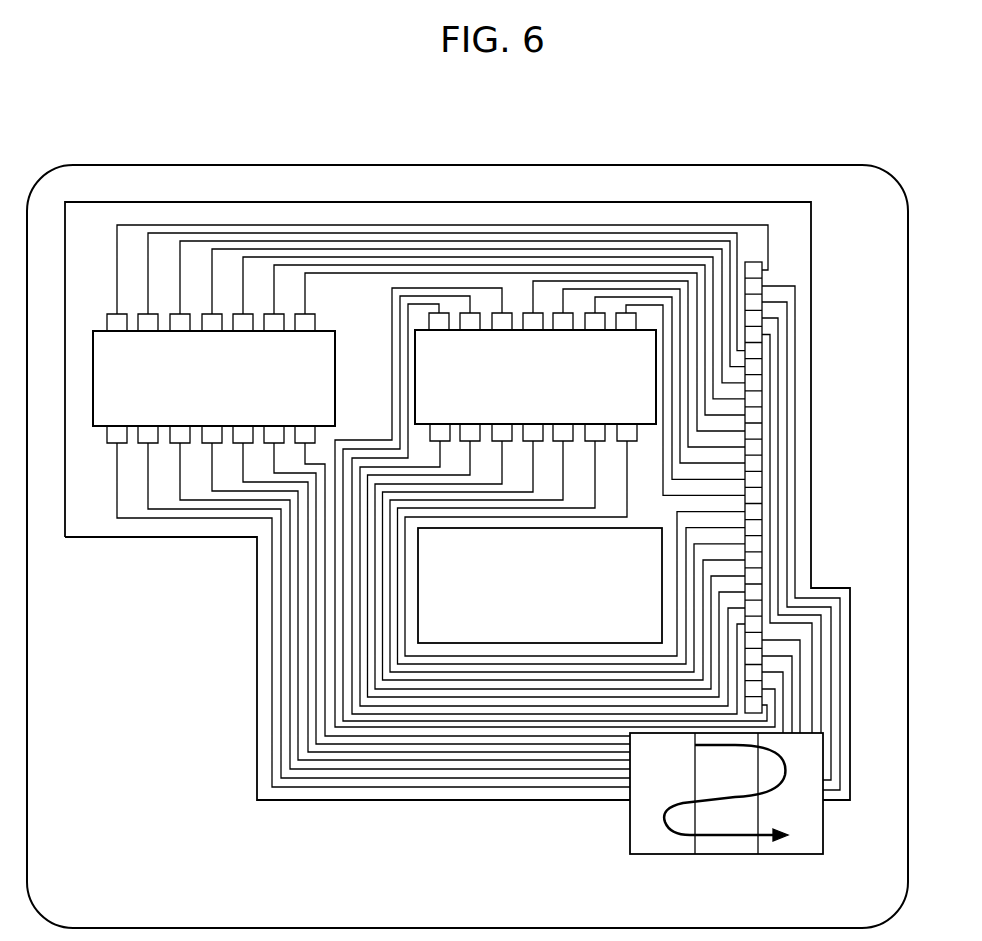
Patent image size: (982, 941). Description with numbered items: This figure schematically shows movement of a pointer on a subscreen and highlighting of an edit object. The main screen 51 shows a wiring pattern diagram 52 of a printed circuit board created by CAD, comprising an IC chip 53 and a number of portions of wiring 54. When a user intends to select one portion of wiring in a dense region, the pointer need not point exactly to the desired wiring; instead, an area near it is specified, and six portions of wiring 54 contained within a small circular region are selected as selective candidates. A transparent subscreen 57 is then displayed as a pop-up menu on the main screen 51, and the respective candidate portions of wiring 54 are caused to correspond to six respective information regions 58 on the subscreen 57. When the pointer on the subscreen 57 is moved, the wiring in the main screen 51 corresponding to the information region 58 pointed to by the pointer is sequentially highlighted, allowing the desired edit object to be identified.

The main screen 51 is at (688, 166).
The wiring pattern diagram 52 is at (567, 202).
The IC chip 53 is at (227, 396).
The portions of wiring 54 is at (162, 520).
The subscreen 57 is at (630, 831).
The information regions 58 is at (807, 832).